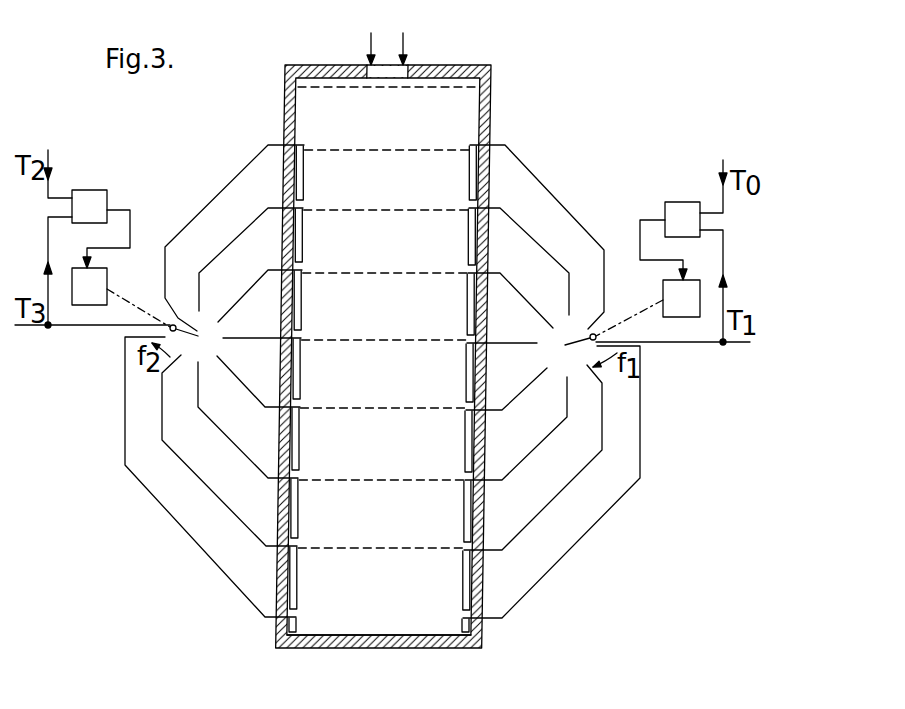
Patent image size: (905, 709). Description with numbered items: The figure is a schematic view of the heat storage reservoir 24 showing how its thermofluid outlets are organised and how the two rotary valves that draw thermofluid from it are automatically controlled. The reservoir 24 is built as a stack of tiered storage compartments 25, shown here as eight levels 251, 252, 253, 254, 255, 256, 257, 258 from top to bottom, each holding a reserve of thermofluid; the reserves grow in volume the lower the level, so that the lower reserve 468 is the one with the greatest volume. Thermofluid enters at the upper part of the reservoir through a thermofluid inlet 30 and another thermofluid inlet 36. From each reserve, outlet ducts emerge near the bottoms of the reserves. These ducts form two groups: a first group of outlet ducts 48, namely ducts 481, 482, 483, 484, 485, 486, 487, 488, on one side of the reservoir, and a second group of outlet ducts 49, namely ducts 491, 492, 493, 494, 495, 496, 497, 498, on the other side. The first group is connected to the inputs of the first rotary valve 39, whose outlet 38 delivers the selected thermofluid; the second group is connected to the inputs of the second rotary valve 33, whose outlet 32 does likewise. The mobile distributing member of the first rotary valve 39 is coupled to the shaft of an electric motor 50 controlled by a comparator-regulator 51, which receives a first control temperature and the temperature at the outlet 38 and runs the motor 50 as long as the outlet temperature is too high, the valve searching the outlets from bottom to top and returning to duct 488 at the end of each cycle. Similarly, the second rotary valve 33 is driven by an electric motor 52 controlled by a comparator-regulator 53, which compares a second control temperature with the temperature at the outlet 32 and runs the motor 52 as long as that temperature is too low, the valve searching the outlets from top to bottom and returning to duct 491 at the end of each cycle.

The heat storage reservoir 24 is at (492, 96).
The tiered storage compartments 25 is at (388, 349).
The first storage compartment 251 is at (400, 132).
The second storage compartment 252 is at (400, 193).
The third storage compartment 253 is at (400, 255).
The fourth storage compartment 254 is at (400, 320).
The fifth storage compartment 255 is at (400, 387).
The sixth storage compartment 256 is at (400, 457).
The seventh storage compartment 257 is at (400, 527).
The eighth storage compartment 258 is at (400, 604).
The thermofluid inlet 30 is at (407, 56).
The thermofluid inlet 36 is at (368, 56).
The outlet of rotary valve 32 is at (92, 330).
The rotary valve 33 is at (222, 355).
The outlet of rotary valve 38 is at (668, 344).
The rotary valve 39 is at (562, 359).
The lower reserve 468 is at (365, 623).
The first group of outlet ducts 48 is at (551, 366).
The outlet duct 481 is at (495, 143).
The outlet duct 482 is at (492, 206).
The outlet duct 483 is at (492, 271).
The outlet duct 484 is at (495, 342).
The outlet duct 485 is at (493, 408).
The outlet duct 486 is at (493, 480).
The outlet duct 487 is at (493, 548).
The outlet duct 488 is at (493, 616).
The second group of outlet ducts 49 is at (214, 366).
The outlet duct 491 is at (281, 143).
The outlet duct 492 is at (281, 206).
The outlet duct 493 is at (281, 268).
The outlet duct 494 is at (266, 337).
The outlet duct 495 is at (267, 402).
The outlet duct 496 is at (265, 473).
The outlet duct 497 is at (267, 542).
The outlet duct 498 is at (267, 610).
The electric motor 50 is at (675, 294).
The comparator-regulator 51 is at (672, 214).
The electric motor 52 is at (98, 286).
The comparator-regulator 53 is at (98, 204).